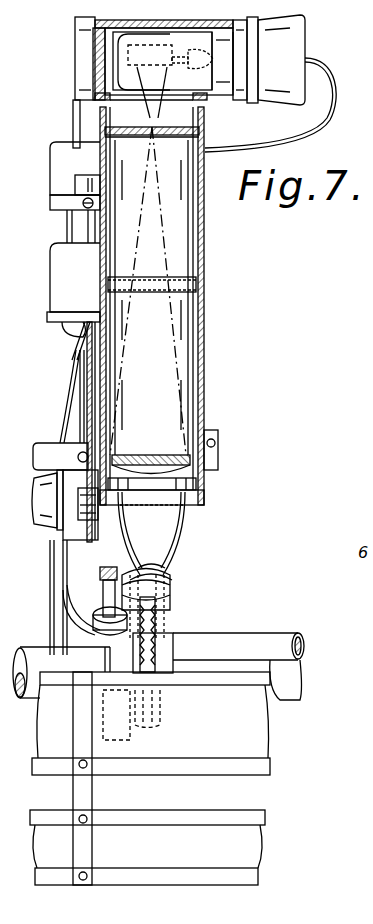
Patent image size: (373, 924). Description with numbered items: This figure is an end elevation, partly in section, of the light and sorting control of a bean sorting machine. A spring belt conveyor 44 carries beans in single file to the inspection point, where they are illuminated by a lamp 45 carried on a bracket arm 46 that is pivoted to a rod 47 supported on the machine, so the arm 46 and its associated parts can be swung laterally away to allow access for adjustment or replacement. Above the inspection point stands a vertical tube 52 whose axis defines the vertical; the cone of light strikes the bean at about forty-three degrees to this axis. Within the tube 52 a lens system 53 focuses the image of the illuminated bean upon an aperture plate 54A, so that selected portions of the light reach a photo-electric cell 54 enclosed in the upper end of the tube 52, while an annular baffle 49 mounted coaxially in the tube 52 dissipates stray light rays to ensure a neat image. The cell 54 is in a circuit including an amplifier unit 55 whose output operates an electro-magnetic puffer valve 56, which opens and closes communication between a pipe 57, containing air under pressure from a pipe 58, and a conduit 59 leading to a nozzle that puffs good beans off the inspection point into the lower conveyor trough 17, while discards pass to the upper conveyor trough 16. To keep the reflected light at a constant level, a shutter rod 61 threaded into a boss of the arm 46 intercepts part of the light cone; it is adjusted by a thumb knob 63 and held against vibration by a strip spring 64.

The upper trough 16 is at (255, 738).
The lower trough 17 is at (163, 847).
The spring belt conveyor 44 is at (158, 668).
The lamp 45 is at (182, 548).
The bracket arm 46 is at (67, 578).
The rod 47 is at (84, 165).
The annular baffle 49 is at (200, 287).
The tube 52 is at (207, 342).
The lens system 53 is at (205, 470).
The photo-electric cell 54 is at (165, 62).
The aperture plate 54A is at (205, 133).
The amplifier unit 55 is at (57, 175).
The electro-magnetic puffer valve 56 is at (55, 278).
The pipe 57 is at (52, 614).
The pipe 58 is at (304, 655).
The conduit 59 is at (68, 232).
The rod 61 is at (200, 498).
The thumb knob 63 is at (40, 513).
The strip spring 64 is at (105, 556).